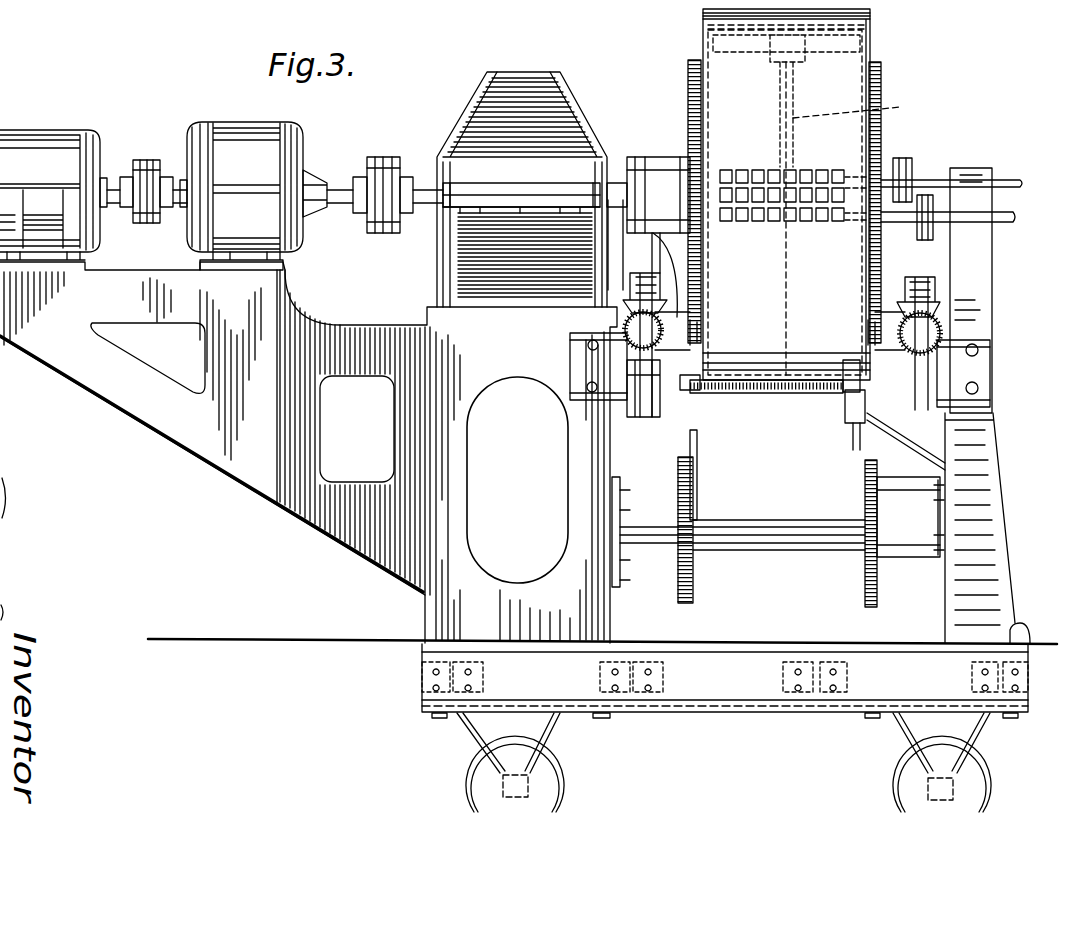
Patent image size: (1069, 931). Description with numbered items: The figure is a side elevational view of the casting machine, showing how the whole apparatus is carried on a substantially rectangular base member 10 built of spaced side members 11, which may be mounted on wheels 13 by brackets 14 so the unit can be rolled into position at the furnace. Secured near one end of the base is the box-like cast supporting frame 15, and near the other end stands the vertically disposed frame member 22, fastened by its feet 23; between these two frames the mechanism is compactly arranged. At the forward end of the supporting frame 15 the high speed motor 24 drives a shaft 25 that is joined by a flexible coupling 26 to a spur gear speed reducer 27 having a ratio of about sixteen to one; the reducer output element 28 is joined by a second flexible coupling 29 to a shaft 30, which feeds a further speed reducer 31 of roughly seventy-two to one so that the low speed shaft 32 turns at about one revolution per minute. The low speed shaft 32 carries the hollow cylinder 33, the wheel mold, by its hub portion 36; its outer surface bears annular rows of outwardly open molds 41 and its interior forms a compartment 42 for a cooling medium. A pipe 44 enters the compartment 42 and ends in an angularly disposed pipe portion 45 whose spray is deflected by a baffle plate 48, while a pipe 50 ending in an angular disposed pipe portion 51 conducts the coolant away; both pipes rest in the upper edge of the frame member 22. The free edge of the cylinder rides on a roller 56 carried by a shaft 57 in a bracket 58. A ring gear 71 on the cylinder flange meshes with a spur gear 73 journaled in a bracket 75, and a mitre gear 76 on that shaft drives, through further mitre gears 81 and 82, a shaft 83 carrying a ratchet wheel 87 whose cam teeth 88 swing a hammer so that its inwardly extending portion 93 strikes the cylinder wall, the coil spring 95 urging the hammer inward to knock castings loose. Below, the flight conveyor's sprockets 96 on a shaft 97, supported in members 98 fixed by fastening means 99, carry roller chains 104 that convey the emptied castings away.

The base member 10 is at (740, 680).
The side members 11 is at (728, 748).
The wheels 13 is at (897, 780).
The brackets 14 is at (1030, 752).
The supporting frame 15 is at (347, 530).
The vertically disposed frame member 22 is at (990, 537).
The feet 23 is at (1013, 632).
The high speed motor 24 is at (50, 138).
The shaft 25 is at (108, 188).
The flexible coupling 26 is at (145, 160).
The spur gear speed reducer 27 is at (232, 135).
The cone pulley 28 is at (338, 193).
The second flexible coupling 29 is at (382, 167).
The shaft 30 is at (423, 192).
The further speed reducer 31 is at (547, 122).
The low speed shaft 32 is at (613, 185).
The hollow cylinder 33 is at (767, 173).
The hub portion 36 is at (645, 162).
The molds 41 is at (808, 217).
The compartment 42 is at (748, 280).
The pipe 44 is at (1040, 160).
The angularly disposed pipe portion 45 is at (856, 101).
The baffle plate 48 is at (757, 52).
The pipe 50 is at (1003, 225).
The angular disposed pipe portion 51 is at (796, 300).
The roller 56 is at (853, 425).
The shaft 57 is at (843, 407).
The bracket 58 is at (917, 440).
The ring gear 71 is at (880, 147).
The spur gear 73 is at (868, 330).
The bracket 75 is at (675, 310).
The mitre gear 76 is at (870, 342).
The mitre gear 81 is at (943, 337).
The mitre gear 82 is at (940, 312).
The shaft 83 is at (950, 357).
The ratchet wheel 87 is at (977, 378).
The cam teeth 88 is at (637, 397).
The right angled inwardly extending portion 93 is at (843, 370).
The coil spring 95 is at (760, 393).
The sprockets 96 is at (863, 570).
The shaft 97 is at (762, 530).
The members 98 is at (902, 557).
The fastening means 99 is at (940, 580).
The roller chains 104 is at (697, 462).